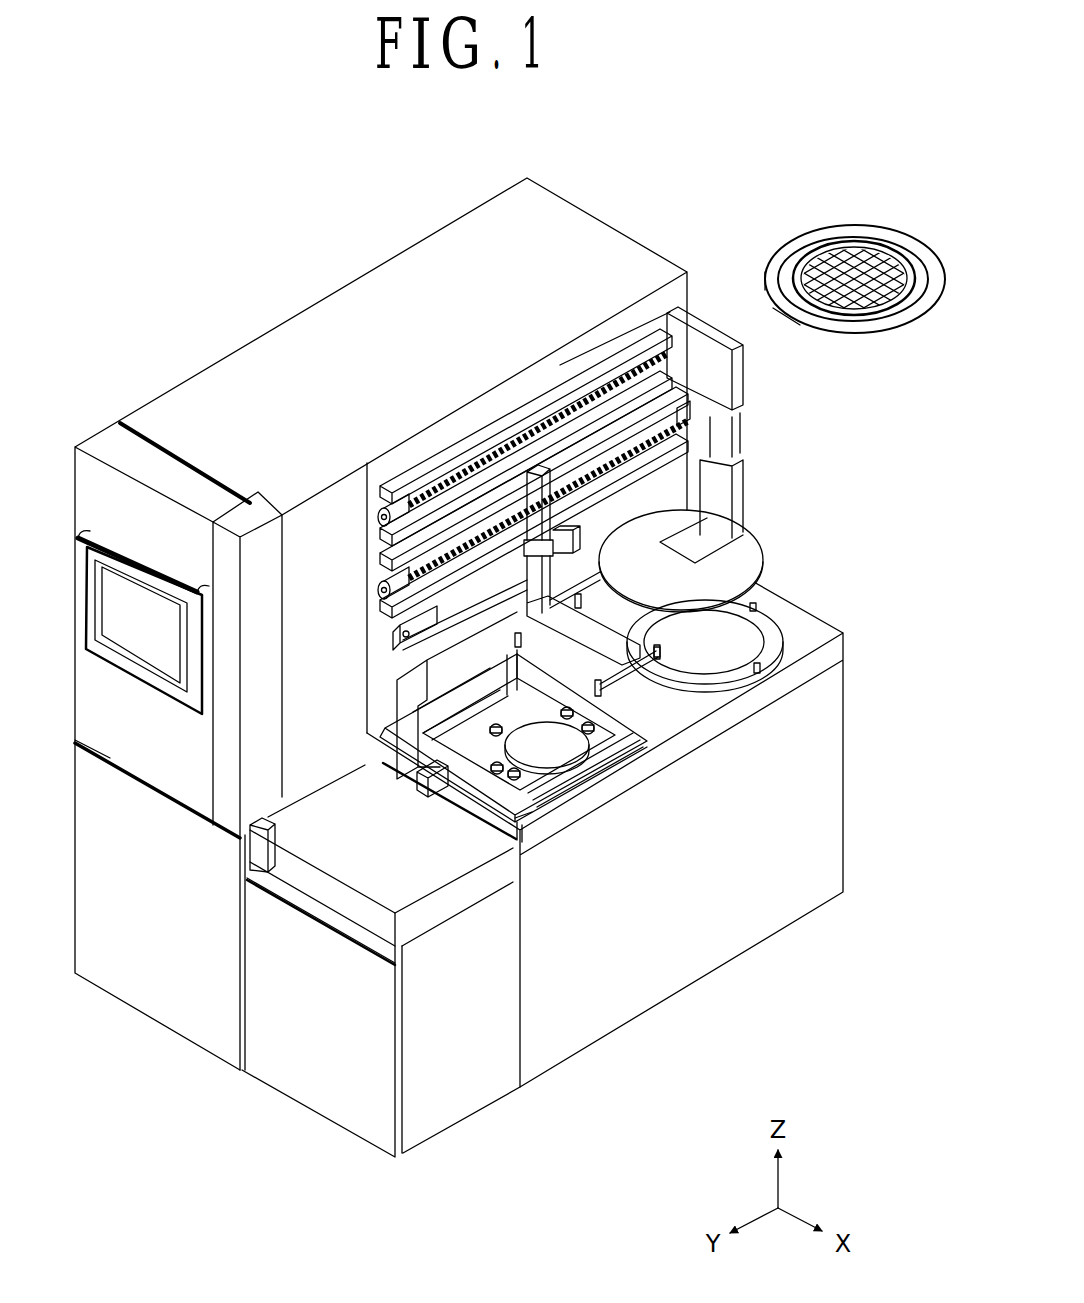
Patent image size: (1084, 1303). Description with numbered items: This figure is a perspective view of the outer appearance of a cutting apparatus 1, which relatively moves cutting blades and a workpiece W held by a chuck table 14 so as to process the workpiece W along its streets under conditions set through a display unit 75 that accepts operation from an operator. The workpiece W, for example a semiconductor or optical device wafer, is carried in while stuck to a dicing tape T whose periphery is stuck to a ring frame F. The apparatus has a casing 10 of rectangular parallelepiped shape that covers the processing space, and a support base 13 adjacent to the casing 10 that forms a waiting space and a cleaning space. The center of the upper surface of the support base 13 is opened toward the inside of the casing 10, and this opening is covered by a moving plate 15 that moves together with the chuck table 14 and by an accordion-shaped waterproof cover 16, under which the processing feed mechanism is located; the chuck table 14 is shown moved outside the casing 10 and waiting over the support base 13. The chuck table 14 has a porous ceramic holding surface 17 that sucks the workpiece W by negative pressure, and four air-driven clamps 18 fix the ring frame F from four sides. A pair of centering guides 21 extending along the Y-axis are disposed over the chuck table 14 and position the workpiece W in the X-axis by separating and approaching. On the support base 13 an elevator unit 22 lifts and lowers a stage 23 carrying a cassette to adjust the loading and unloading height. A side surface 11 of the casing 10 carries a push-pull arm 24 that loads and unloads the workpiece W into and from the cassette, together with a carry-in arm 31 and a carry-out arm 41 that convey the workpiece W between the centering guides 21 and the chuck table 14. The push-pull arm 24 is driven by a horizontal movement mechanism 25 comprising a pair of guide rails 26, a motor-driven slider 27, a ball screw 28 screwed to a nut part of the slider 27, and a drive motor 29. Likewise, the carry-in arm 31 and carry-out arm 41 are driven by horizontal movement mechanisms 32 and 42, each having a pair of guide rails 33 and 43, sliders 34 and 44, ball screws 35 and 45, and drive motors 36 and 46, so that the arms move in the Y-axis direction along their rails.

The cutting apparatus 1 is at (657, 205).
The casing 10 is at (558, 220).
The side surface 11 is at (585, 346).
The support base 13 is at (812, 630).
The chuck table 14 is at (562, 700).
The moving plate 15 is at (608, 745).
The waterproof cover 16 is at (530, 700).
The holding surface 17 is at (566, 733).
The clamps 18 is at (520, 766).
The centering guides 21 is at (476, 695).
The elevator unit 22 is at (318, 778).
The stage 23 is at (352, 800).
The push-pull arm 24 is at (418, 792).
The horizontal movement mechanism 25 is at (393, 640).
The guide rails 26 is at (495, 622).
The slider 27 is at (398, 693).
The ball screw 28 is at (520, 604).
The drive motor 29 is at (397, 642).
The carry-in arm 31 is at (556, 600).
The horizontal movement mechanism 32 is at (360, 555).
The guide rails 33 is at (570, 465).
The slider 34 is at (540, 466).
The ball screw 35 is at (447, 500).
The drive motor 36 is at (377, 590).
The carry-out arm 41 is at (750, 492).
The horizontal movement mechanism 42 is at (360, 486).
The guide rails 43 is at (620, 408).
The slider 44 is at (702, 336).
The ball screw 45 is at (488, 445).
The drive motor 46 is at (377, 517).
The display unit 75 is at (110, 598).
The ring frame F is at (773, 262).
The dicing tape T is at (918, 262).
The workpiece W is at (880, 248).